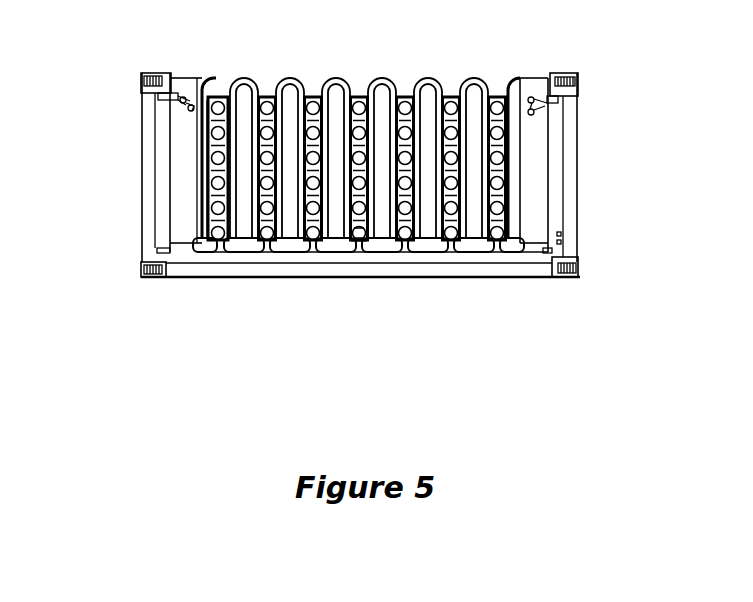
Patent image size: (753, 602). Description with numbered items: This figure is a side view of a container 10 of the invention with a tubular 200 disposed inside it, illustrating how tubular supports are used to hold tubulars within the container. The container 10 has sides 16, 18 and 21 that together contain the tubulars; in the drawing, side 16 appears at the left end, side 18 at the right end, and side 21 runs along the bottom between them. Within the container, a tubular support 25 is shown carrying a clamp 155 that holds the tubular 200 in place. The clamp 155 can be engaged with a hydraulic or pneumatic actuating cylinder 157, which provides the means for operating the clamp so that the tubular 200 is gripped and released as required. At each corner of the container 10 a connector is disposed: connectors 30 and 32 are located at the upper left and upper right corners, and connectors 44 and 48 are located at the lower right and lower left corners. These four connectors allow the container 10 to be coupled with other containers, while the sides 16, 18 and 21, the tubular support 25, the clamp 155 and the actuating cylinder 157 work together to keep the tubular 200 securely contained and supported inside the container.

The container 10 is at (257, 298).
The side 16 is at (152, 160).
The side 18 is at (562, 152).
The side 21 is at (415, 278).
The tubular support 25 is at (477, 95).
The connector 30 is at (156, 72).
The connector 32 is at (568, 73).
The connector 44 is at (575, 278).
The connector 48 is at (150, 278).
The clamp 155 is at (357, 236).
The hydraulic or pneumatic actuating cylinder 157 is at (302, 240).
The tubular 200 is at (268, 100).